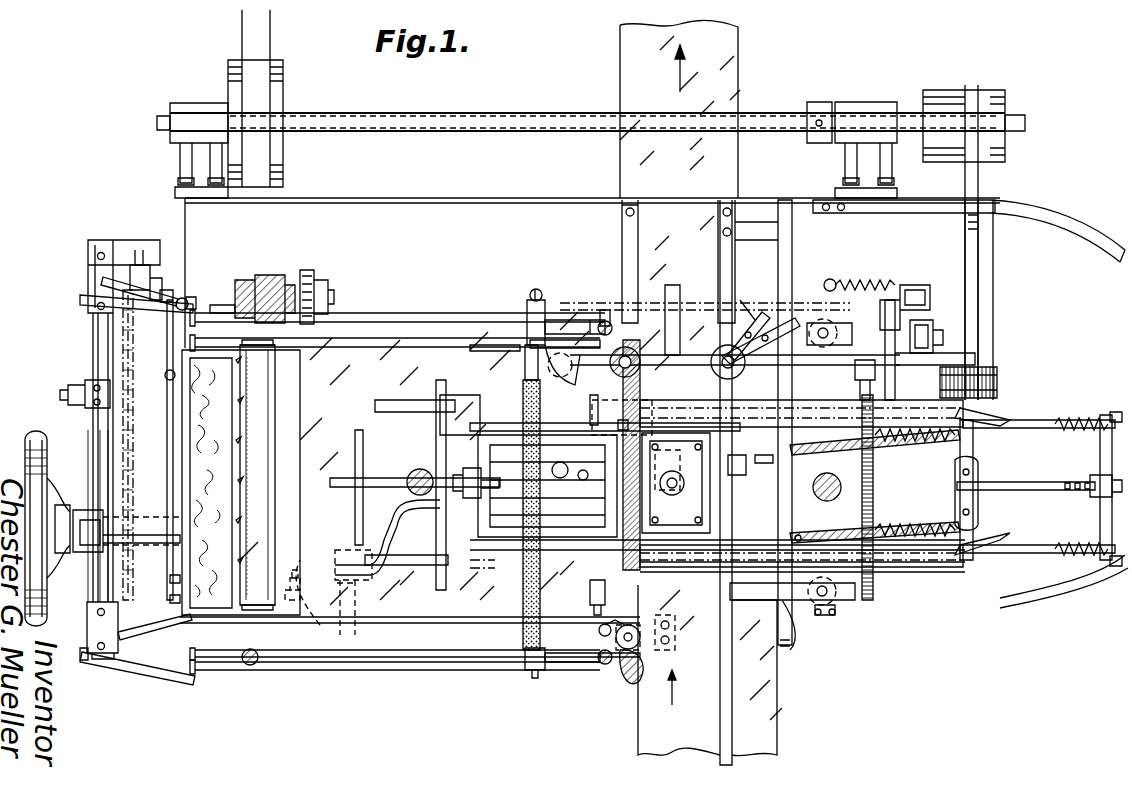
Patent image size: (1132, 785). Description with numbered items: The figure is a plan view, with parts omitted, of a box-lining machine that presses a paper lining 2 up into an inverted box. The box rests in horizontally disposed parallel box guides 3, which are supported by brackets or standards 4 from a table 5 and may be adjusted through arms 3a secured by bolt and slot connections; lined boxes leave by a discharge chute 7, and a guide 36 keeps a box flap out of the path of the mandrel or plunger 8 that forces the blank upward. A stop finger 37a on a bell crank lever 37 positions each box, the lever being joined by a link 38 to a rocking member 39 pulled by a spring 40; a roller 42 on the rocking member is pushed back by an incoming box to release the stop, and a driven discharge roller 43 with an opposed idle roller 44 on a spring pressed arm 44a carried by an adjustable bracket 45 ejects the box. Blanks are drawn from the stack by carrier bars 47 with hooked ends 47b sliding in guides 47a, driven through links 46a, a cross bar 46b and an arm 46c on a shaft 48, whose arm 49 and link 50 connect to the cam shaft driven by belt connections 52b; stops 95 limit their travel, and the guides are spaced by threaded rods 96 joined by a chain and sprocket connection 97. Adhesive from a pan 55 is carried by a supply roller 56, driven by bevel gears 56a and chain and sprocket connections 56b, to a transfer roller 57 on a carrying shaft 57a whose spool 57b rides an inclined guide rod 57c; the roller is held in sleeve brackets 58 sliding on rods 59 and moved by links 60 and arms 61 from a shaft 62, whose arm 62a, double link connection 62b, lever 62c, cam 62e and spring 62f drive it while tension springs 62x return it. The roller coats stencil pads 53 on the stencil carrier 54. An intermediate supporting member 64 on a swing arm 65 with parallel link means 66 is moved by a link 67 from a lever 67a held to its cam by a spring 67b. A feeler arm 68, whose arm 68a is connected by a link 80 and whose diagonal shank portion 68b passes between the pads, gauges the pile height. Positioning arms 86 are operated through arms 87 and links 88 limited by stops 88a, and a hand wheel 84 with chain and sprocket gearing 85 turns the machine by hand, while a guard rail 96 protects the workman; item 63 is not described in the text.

The lining 2 is at (468, 393).
The box guides 3 is at (715, 574).
The arms 3a is at (825, 605).
The brackets or standards 4 is at (800, 652).
The table 5 is at (548, 198).
The discharge chute 7 is at (705, 85).
The mandrel or plunger 8 is at (705, 500).
The guide 36 is at (642, 645).
The bell crank lever 37 is at (640, 372).
The stop finger 37a is at (637, 407).
The link 38 is at (575, 600).
The rocking member 39 is at (598, 632).
The spring 40 is at (600, 660).
The roller 42 is at (622, 665).
The discharge roller 43 is at (630, 348).
The idle roller 44 is at (725, 348).
The spring pressed arm 44a is at (740, 310).
The adjustable bracket 45 is at (772, 315).
The links 46a is at (1075, 553).
The cross bar 46b is at (1100, 502).
The arm 46c is at (1055, 475).
The carrier bars 47 is at (905, 575).
The guides 47a is at (940, 570).
The hooked ends 47b is at (675, 402).
The shaft 48 is at (985, 455).
The arm 49 is at (965, 350).
The link 50 is at (960, 330).
The belt connections 52b is at (990, 245).
The stencil pads 53 is at (355, 574).
The stencil carrier 54 is at (405, 462).
The tank or pan 55 is at (185, 500).
The supply roller 56 is at (276, 387).
The bevel gears 56a is at (272, 282).
The chain and sprocket connections 56b is at (320, 278).
The transfer roller 57 is at (515, 578).
The carrying shaft 57a is at (510, 650).
The spool 57b is at (520, 350).
The guide rod 57c is at (475, 352).
The sleeve brackets 58 is at (530, 672).
The rods 59 is at (414, 650).
The links 60 is at (380, 668).
The arms 61 is at (135, 680).
The shaft 62 is at (100, 462).
The arm 62a is at (120, 245).
The double link connection 62b is at (168, 272).
The lever 62c is at (170, 342).
The cam 62e is at (170, 490).
The spring 62f is at (163, 385).
The tension springs 62x is at (55, 387).
The plate 63 is at (445, 582).
The intermediate supporting member 64 is at (605, 480).
The swing arm 65 is at (575, 362).
The parallel link means 66 is at (572, 460).
The link 67 is at (597, 298).
The lever 67a is at (912, 282).
The spring 67b is at (865, 280).
The feeler arm 68 is at (355, 502).
The arm 68a is at (330, 632).
The diagonal shank portion 68b is at (352, 534).
The link 80 is at (300, 580).
The hand wheel 84 is at (35, 432).
The chain and sprocket gearing 85 is at (150, 420).
The positioning arms 86 is at (755, 532).
The arms 87 is at (865, 530).
The links 88 is at (830, 472).
The stops 88a is at (875, 528).
The stops 95 is at (1010, 552).
The guard rail 96 is at (490, 568).
The chain and sprocket connection 97 is at (825, 357).